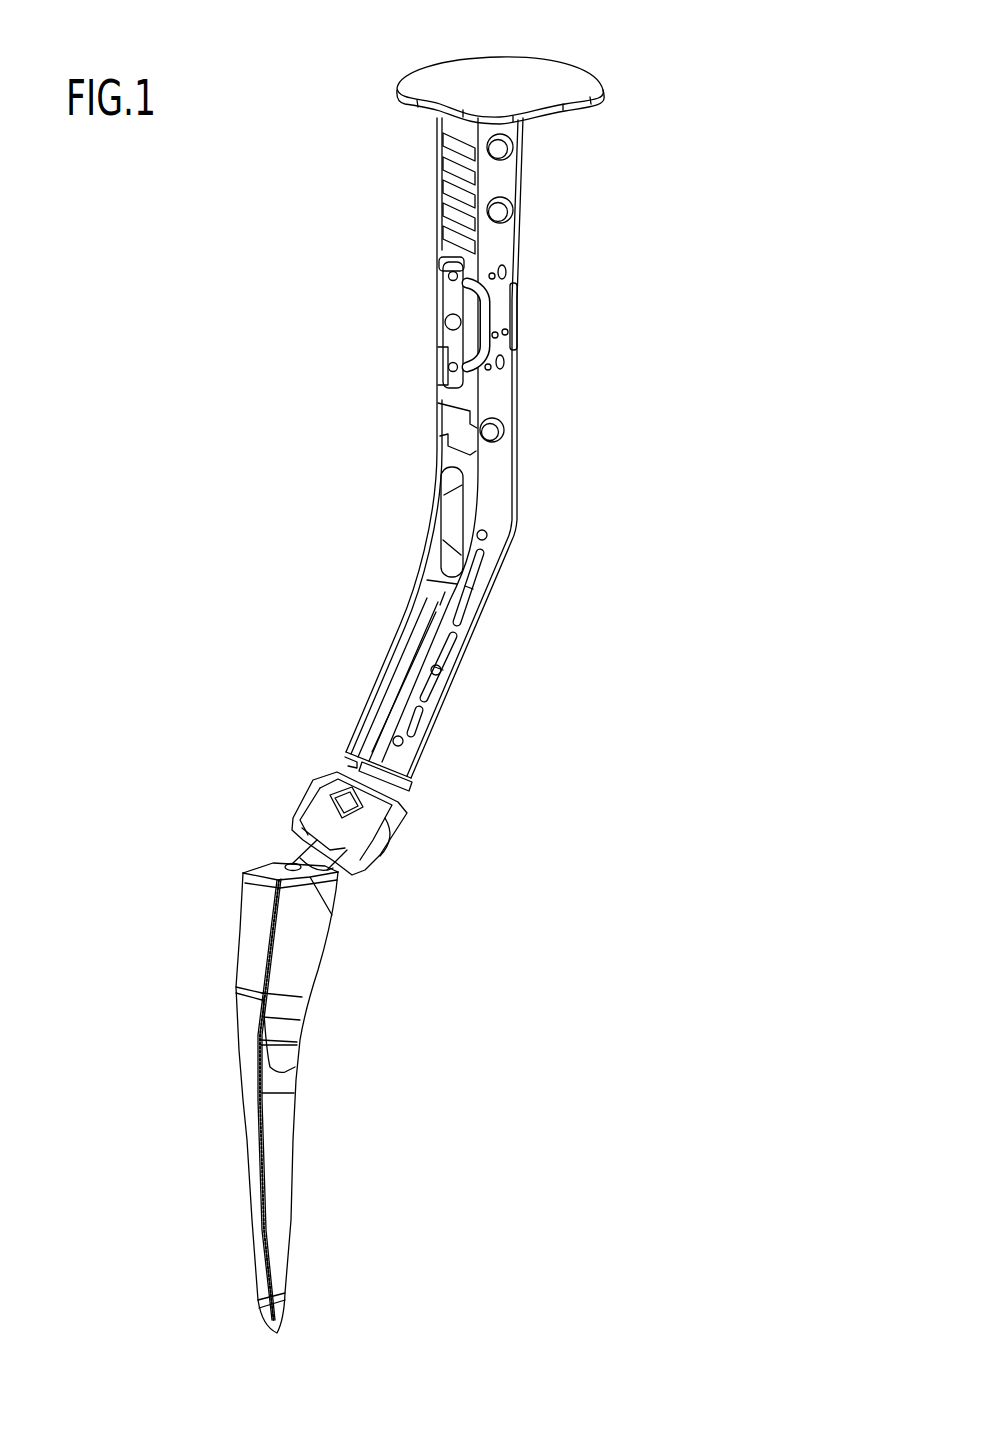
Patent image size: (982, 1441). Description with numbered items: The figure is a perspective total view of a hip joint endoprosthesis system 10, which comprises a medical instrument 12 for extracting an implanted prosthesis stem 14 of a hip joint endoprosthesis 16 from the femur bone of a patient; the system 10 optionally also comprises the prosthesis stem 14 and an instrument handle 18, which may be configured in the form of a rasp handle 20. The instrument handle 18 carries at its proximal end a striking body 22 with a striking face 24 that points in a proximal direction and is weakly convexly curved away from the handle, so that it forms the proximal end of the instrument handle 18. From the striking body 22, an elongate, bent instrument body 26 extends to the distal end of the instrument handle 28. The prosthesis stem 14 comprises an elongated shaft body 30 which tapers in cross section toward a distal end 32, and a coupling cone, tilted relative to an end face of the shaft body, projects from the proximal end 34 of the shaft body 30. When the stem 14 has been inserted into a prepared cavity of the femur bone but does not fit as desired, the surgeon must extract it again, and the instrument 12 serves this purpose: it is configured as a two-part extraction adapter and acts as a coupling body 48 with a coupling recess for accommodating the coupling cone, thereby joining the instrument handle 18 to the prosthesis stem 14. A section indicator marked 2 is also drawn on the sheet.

The hip joint endoprosthesis system 10 is at (632, 179).
The section line 2- 2 is at (628, 290).
The medical instrument 12 is at (433, 850).
The prosthesis stem 14 is at (210, 1089).
The hip joint endoprosthesis 16 is at (196, 927).
The instrument handle 18 is at (408, 441).
The rasp handle 20 is at (572, 380).
The striking body 22 is at (565, 82).
The striking face 24 is at (544, 75).
The instrument body 26 is at (495, 478).
The distal end of the instrument handle 28 is at (394, 787).
The shaft body 30 is at (280, 1082).
The distal end 32 is at (278, 1311).
The proximal end 34 is at (270, 862).
The coupling body 48 is at (322, 778).